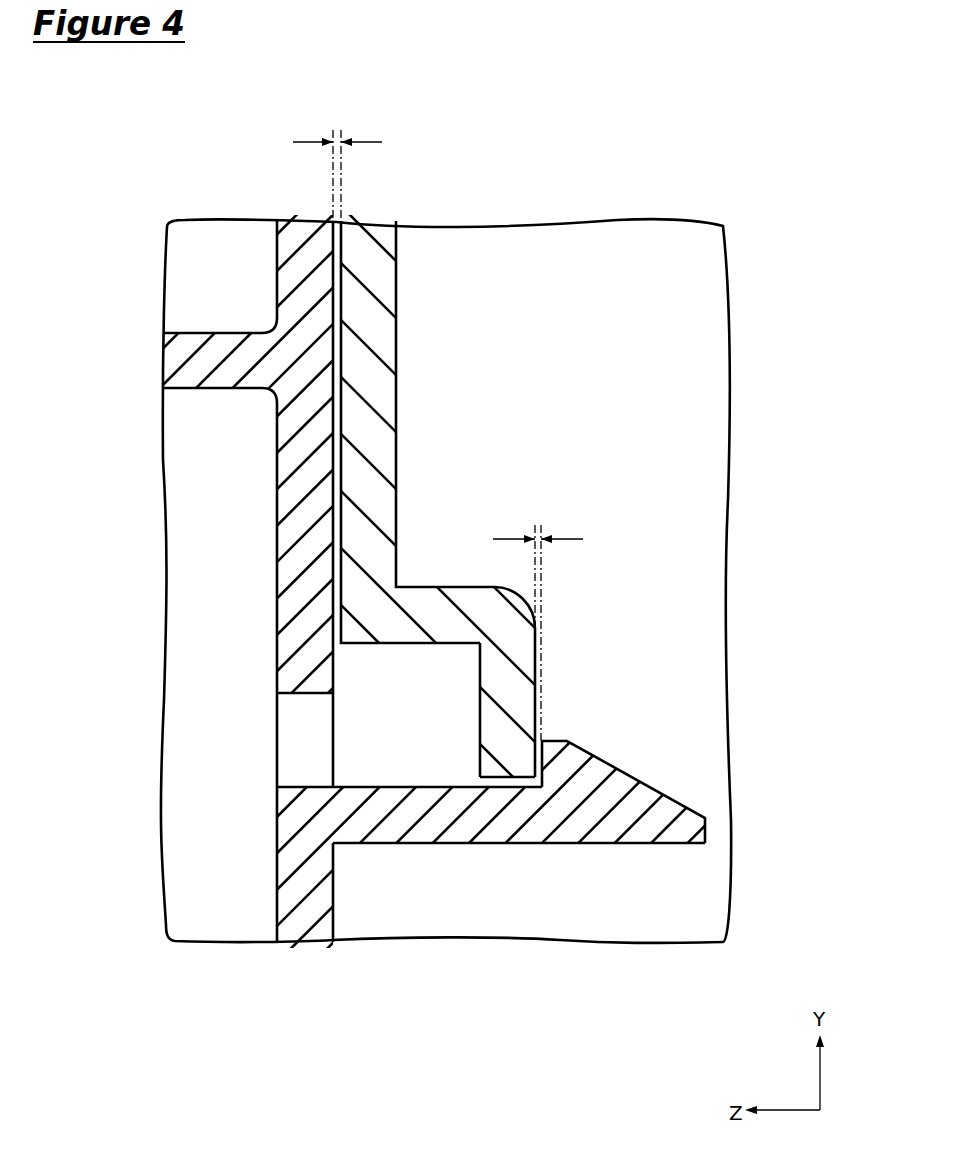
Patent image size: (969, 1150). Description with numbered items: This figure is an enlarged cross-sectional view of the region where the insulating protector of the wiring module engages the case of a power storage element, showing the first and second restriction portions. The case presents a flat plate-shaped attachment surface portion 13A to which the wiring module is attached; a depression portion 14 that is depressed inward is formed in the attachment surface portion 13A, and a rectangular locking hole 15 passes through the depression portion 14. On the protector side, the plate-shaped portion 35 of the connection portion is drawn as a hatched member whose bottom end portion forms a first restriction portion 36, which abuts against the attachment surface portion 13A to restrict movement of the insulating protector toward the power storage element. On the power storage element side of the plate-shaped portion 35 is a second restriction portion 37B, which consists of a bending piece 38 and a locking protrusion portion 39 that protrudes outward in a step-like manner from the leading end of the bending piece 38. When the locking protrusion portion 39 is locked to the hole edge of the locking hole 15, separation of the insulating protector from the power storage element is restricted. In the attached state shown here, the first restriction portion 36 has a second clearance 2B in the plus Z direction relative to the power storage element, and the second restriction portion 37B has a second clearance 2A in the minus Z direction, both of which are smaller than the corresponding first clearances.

The second clearance 2A is at (540, 525).
The second clearance 2B is at (336, 137).
The attachment surface portion 13A is at (378, 388).
The depression portion 14 is at (495, 731).
The locking hole 15 is at (503, 777).
The plate-shaped portion 35 is at (287, 532).
The first restriction portion 36 is at (337, 310).
The second restriction portion 37B is at (484, 500).
The bending piece 38 is at (483, 843).
The locking protrusion portion 39 is at (647, 782).